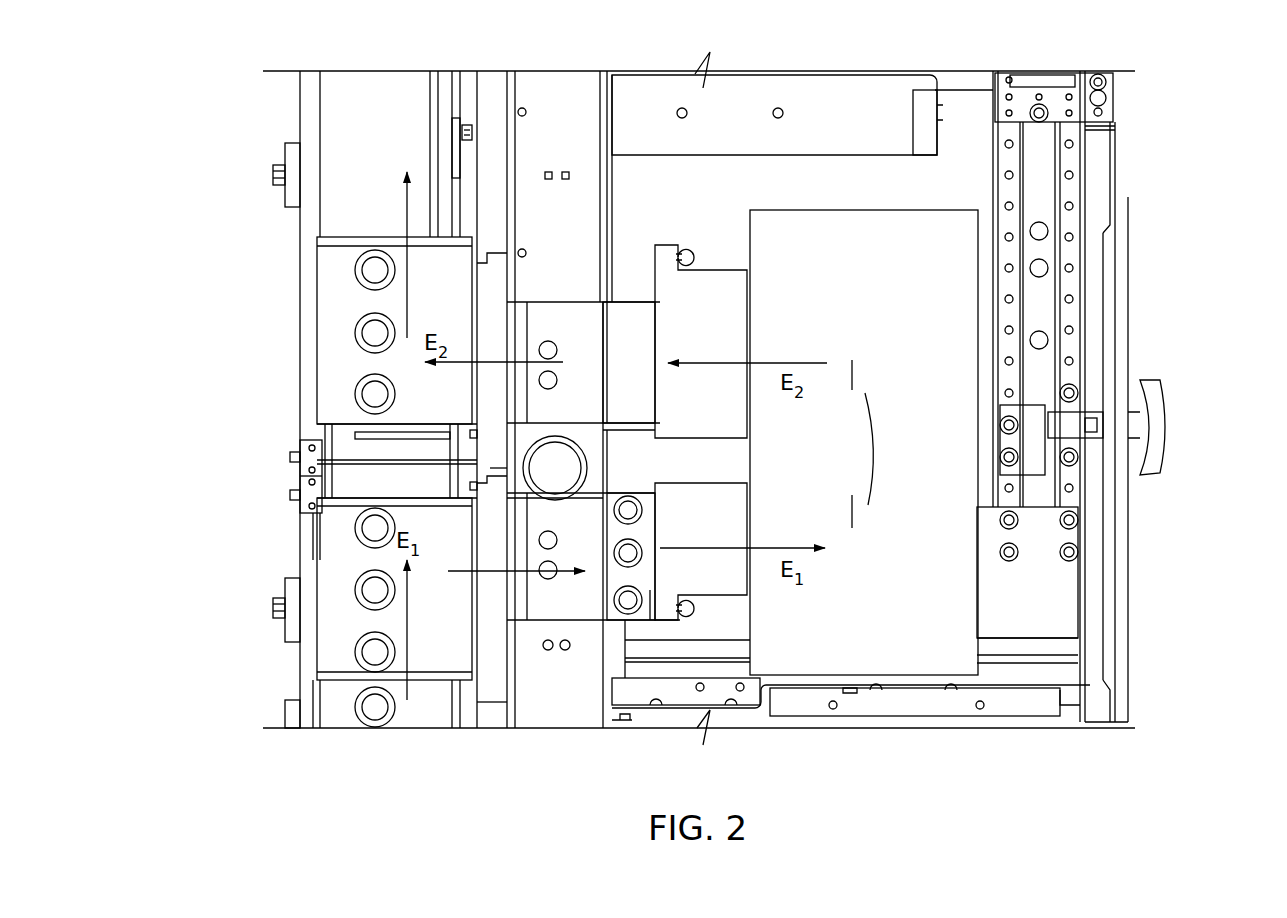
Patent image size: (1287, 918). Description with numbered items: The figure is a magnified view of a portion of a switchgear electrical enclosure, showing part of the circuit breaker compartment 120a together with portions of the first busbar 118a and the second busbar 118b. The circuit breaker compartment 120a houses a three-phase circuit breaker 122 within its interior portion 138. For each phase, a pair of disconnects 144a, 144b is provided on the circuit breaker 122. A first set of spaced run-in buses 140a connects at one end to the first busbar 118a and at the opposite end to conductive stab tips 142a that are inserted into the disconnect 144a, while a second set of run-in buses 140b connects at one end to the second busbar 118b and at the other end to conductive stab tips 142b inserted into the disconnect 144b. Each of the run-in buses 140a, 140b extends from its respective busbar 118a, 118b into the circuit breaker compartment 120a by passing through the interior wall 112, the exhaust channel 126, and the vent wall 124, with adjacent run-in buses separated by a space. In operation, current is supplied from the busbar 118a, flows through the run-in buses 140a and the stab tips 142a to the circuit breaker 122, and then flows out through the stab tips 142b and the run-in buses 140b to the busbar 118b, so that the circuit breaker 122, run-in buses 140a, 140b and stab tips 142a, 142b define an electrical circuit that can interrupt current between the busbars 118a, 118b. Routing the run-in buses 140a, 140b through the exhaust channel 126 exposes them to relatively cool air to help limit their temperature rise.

The interior wall 112 is at (492, 95).
The first busbar 118a is at (335, 707).
The second busbar 118b is at (335, 125).
The circuit breaker compartment 120a is at (1118, 130).
The circuit breaker 122 is at (843, 326).
The vent wall 124 is at (597, 113).
The exhaust channel 126 is at (580, 256).
The interior portion 138 is at (811, 194).
The first set of run-in buses 140a is at (317, 558).
The second set of run-in buses 140b is at (317, 305).
The conductive stab tips 142a is at (643, 612).
The conductive stab tips 142b is at (632, 320).
The disconnect 144a is at (727, 522).
The disconnect 144b is at (727, 320).